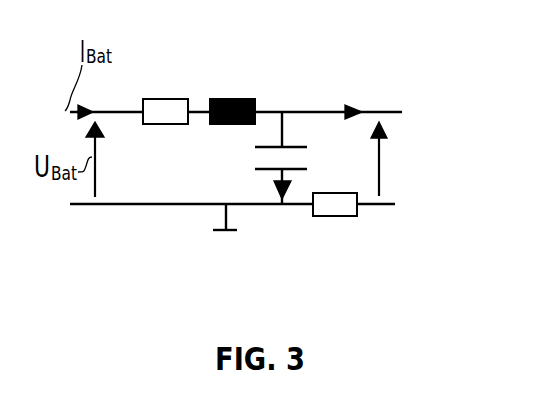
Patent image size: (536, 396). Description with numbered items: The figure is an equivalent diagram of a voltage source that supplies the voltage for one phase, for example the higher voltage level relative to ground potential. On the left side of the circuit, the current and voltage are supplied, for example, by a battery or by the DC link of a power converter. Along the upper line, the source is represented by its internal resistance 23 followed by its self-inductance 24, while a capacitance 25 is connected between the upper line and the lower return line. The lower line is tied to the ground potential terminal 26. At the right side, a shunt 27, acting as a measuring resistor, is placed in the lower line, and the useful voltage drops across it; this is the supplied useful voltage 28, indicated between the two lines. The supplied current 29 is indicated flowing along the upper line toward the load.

The internal resistance 23 is at (165, 99).
The self-inductance 24 is at (233, 99).
The capacitance 25 is at (268, 159).
The ground potential terminal 26 is at (220, 231).
The shunt 27 is at (335, 217).
The supplied useful voltage 28 is at (380, 155).
The supplied current 29 is at (315, 112).